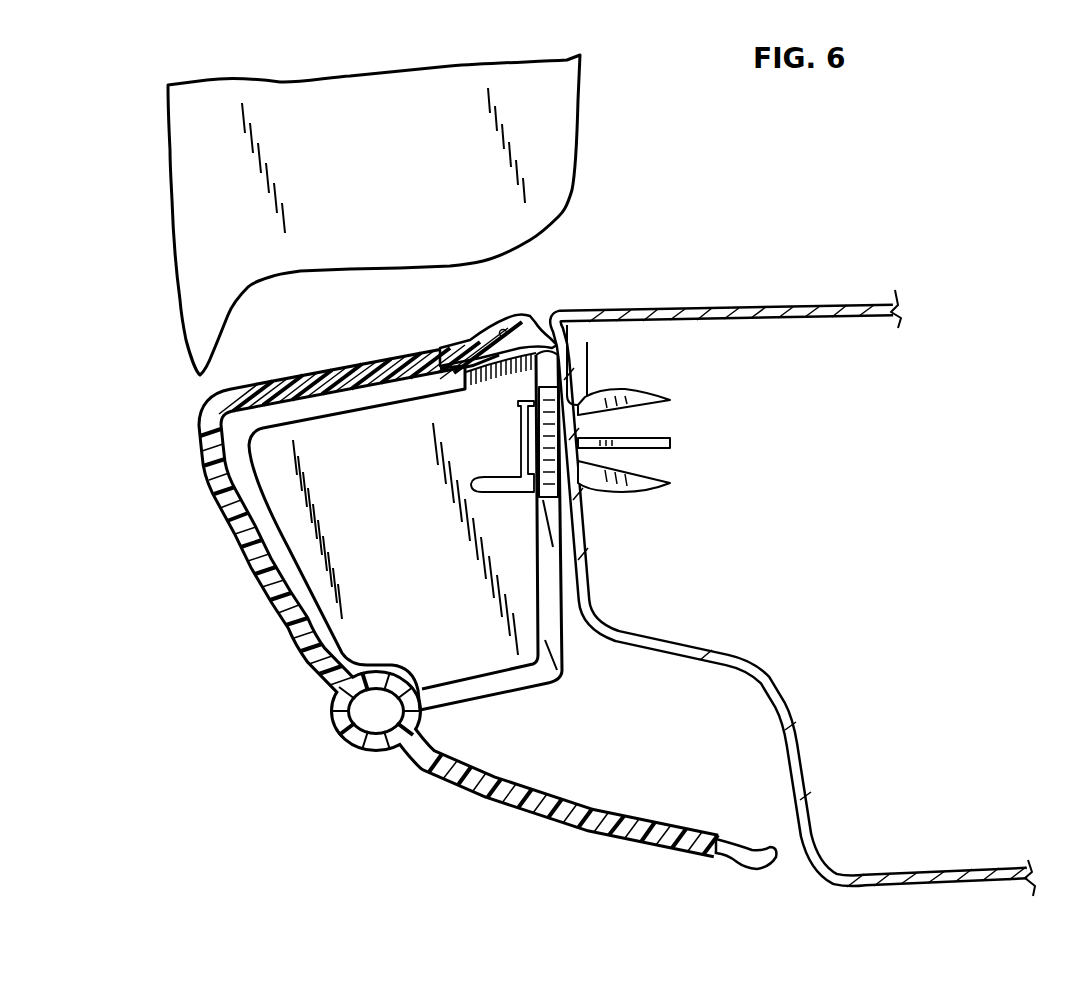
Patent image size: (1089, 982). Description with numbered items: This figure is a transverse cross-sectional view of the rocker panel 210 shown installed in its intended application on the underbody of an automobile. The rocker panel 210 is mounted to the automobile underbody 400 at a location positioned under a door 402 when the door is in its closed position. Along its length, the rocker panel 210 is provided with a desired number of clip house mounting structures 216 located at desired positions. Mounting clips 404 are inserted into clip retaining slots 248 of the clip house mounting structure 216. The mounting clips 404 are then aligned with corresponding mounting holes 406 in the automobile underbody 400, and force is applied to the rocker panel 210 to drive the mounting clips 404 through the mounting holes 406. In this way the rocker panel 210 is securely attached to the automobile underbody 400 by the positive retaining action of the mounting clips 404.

The rocker panel 210 is at (272, 580).
The clip house mounting structure 216 is at (458, 622).
The clip retaining slot 248 is at (527, 437).
The automobile underbody 400 is at (697, 650).
The door 402 is at (558, 151).
The mounting clip 404 is at (660, 483).
The mounting hole 406 is at (600, 400).